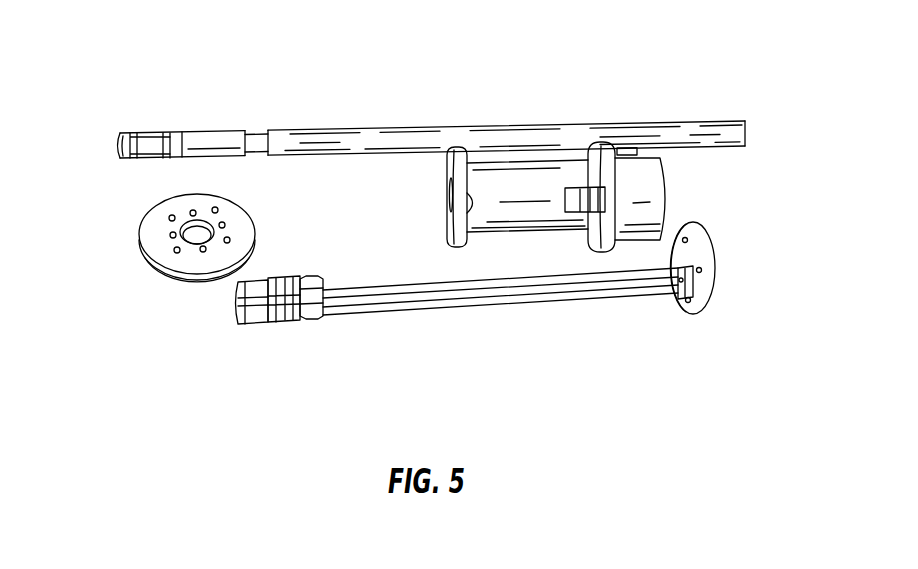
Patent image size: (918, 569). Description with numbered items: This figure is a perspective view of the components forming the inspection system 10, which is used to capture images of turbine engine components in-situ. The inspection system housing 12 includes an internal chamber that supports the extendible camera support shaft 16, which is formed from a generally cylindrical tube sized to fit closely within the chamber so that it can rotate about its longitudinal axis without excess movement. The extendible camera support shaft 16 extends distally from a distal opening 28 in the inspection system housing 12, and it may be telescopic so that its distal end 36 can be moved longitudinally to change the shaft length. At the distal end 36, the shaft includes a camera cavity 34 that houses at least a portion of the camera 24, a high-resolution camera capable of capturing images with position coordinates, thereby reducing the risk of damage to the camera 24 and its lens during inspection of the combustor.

The inspection system 10 is at (396, 87).
The inspection system housing 12 is at (643, 173).
The extendible camera support shaft 16 is at (543, 154).
The camera 24 is at (131, 140).
The distal opening 28 is at (450, 197).
The camera cavity 34 is at (172, 140).
The distal end 36 is at (117, 136).